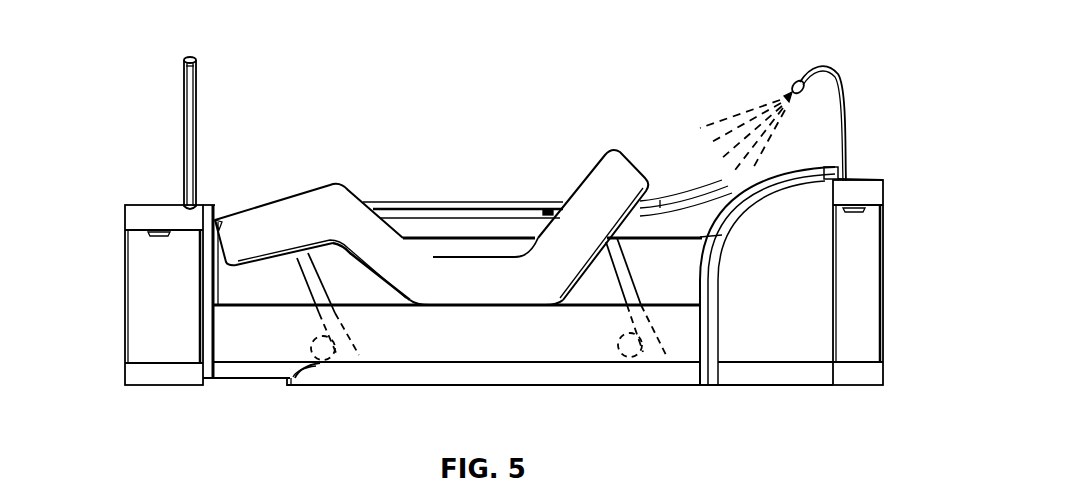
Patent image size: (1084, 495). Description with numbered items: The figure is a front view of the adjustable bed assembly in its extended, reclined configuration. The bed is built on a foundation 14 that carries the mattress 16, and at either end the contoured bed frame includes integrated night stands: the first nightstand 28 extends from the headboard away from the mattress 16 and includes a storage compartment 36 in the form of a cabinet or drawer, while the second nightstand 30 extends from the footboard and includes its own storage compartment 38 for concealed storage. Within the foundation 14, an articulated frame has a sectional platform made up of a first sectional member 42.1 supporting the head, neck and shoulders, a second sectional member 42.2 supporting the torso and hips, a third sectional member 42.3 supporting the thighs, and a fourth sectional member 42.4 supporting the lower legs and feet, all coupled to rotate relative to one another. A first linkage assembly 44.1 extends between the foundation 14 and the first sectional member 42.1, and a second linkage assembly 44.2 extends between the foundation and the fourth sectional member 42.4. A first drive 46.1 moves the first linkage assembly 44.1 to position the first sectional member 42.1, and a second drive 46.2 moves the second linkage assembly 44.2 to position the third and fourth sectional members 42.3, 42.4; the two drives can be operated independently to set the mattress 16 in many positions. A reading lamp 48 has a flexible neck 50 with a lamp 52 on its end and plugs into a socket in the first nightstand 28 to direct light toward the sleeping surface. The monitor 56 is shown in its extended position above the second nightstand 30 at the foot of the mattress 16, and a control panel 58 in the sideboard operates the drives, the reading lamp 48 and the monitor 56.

The foundation 14 is at (477, 345).
The mattress 16 is at (477, 295).
The first nightstand 28 is at (888, 268).
The second nightstand 30 is at (120, 292).
The storage compartment 36 is at (870, 346).
The storage compartment 38 is at (137, 347).
The first sectional member 42.1 is at (600, 245).
The second sectional member 42.2 is at (413, 300).
The third sectional member 42.3 is at (352, 253).
The fourth sectional member 42.4 is at (275, 250).
The first linkage assembly 44.1 is at (608, 296).
The second linkage assembly 44.2 is at (297, 280).
The first drive 46.1 is at (632, 350).
The second drive 46.2 is at (322, 352).
The reading lamp 48 is at (813, 97).
The flexible neck 50 is at (846, 112).
The lamp 52 is at (800, 80).
The monitor 56 is at (193, 74).
The control panel 58 is at (554, 200).